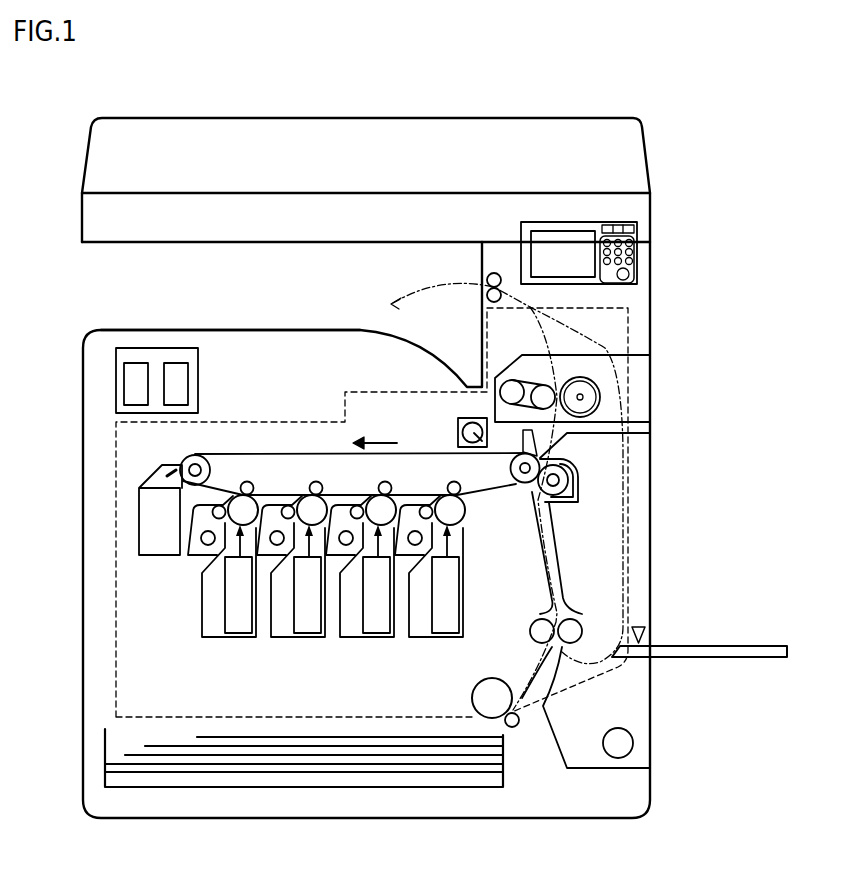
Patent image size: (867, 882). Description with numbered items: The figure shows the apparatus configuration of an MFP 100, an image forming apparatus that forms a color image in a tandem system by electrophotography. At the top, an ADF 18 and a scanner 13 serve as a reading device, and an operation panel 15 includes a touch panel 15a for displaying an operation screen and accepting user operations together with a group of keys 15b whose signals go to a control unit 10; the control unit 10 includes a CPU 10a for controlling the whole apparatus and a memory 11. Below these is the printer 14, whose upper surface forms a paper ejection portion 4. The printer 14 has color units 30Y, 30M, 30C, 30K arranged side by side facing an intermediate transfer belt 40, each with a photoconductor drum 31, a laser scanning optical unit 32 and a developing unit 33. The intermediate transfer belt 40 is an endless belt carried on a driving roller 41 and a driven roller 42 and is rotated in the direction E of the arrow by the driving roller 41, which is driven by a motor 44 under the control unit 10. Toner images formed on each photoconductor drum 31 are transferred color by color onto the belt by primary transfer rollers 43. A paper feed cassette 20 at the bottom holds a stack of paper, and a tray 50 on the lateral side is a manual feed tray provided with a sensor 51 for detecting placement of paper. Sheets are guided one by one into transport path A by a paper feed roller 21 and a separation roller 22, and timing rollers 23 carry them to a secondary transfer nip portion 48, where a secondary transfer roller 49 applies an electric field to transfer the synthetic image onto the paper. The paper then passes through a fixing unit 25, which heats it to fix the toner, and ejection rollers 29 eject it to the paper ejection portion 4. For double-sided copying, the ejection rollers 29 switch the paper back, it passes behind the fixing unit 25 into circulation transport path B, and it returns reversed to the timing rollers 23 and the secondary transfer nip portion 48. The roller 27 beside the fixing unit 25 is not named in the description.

The MFP 100 is at (606, 71).
The ADF 18 is at (84, 156).
The scanner 13 is at (82, 219).
The operation panel 15 is at (640, 233).
The touch panel 15a is at (579, 229).
The group of keys 15b is at (640, 258).
The ejection rollers 29 is at (488, 274).
The paper ejection portion 4 is at (281, 330).
The control unit 10 is at (157, 348).
The CPU 10a is at (133, 362).
The memory 11 is at (181, 362).
The fixing unit 25 is at (566, 356).
The pressure roller 27 is at (587, 378).
The transport path A is at (566, 446).
The printer 14 is at (628, 471).
The intermediate transfer belt 40 is at (278, 453).
The driven roller 42 is at (212, 452).
The driving roller 41 is at (510, 466).
The motor 44 is at (458, 433).
The direction of the arrow E is at (375, 434).
The color unit 30Y is at (215, 638).
The color unit 30M is at (285, 638).
The color unit 30C is at (355, 638).
The color unit 30K is at (437, 638).
The photoconductor drum 31 is at (257, 498).
The primary transfer roller 43 is at (246, 481).
The developing unit 33 is at (197, 556).
The laser scanning optical unit 32 is at (240, 625).
The secondary transfer roller 49 is at (559, 504).
The secondary transfer nip portion 48 is at (531, 496).
The circulation transport path B is at (622, 575).
The timing rollers 23 is at (530, 629).
The paper feed roller 21 is at (493, 677).
The separation roller 22 is at (516, 727).
The paper feed cassette 20 is at (404, 790).
The tray 50 is at (717, 645).
The sensor 51 is at (640, 625).